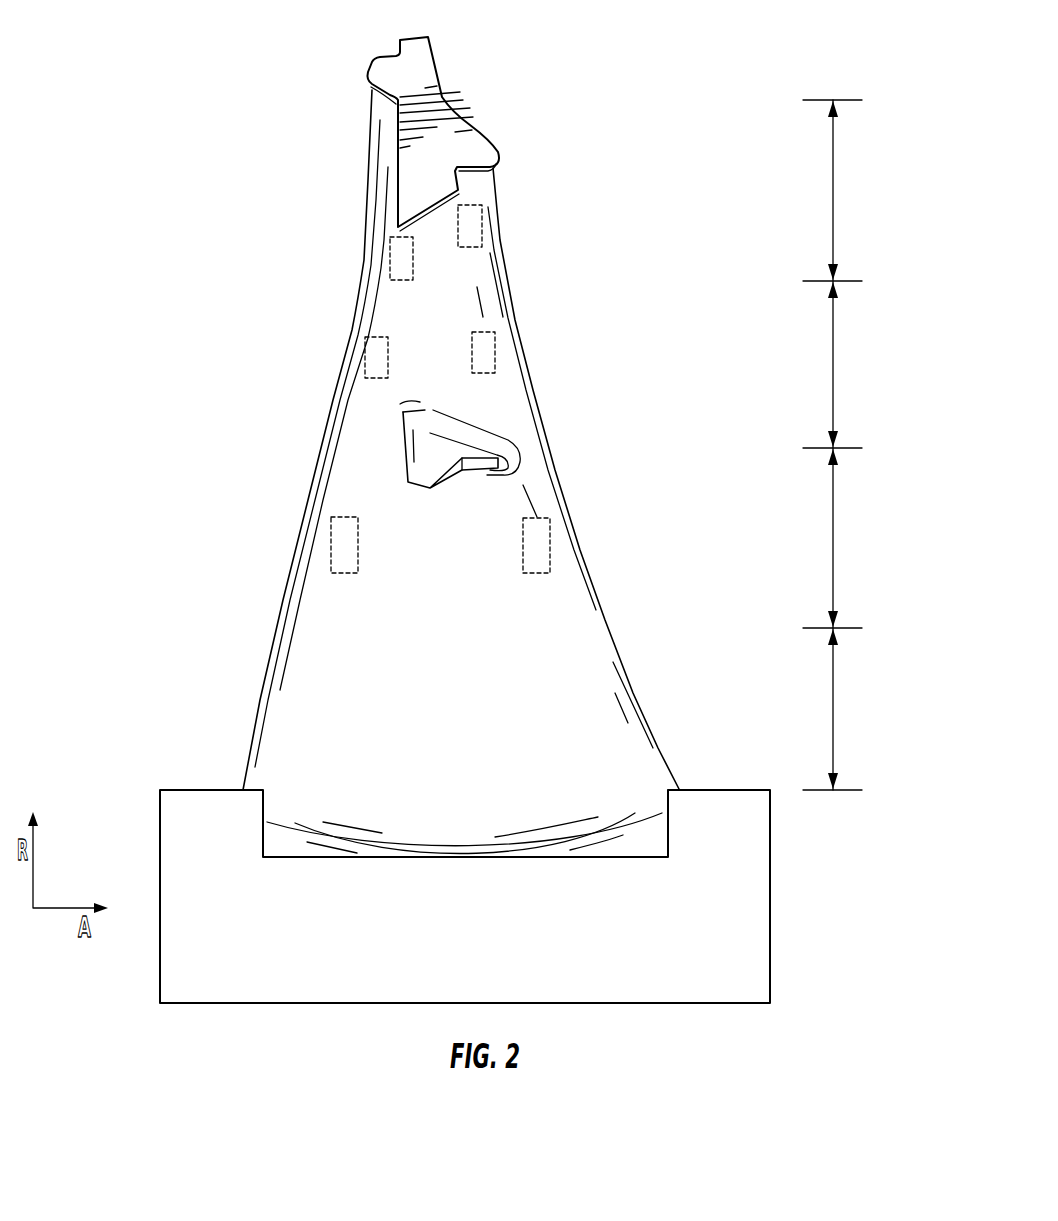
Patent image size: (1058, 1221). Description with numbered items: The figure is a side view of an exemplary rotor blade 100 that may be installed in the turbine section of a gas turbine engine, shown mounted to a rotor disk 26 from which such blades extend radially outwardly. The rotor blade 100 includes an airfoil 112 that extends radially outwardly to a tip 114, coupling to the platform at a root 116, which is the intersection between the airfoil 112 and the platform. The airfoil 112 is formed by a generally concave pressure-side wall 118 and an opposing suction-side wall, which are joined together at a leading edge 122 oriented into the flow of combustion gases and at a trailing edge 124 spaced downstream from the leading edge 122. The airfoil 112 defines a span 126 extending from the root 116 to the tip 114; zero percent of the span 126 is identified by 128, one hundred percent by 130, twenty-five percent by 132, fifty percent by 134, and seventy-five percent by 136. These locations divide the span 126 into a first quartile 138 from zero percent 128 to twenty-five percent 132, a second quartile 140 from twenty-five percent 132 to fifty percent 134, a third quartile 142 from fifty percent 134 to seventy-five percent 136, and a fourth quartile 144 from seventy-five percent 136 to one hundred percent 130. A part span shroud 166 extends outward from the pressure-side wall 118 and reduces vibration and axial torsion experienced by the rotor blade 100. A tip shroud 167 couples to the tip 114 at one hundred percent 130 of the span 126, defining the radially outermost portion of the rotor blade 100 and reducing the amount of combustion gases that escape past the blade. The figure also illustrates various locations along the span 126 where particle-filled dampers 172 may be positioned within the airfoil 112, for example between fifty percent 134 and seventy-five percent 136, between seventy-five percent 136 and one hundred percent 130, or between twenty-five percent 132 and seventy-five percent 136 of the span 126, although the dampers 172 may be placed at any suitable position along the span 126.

The rotor blade 100 is at (148, 186).
The rotor disk 26 is at (577, 912).
The airfoil 112 is at (340, 488).
The tip 114 is at (495, 185).
The root 116 is at (681, 789).
The pressure-side wall 118 is at (492, 666).
The leading edge 122 is at (340, 396).
The trailing edge 124 is at (507, 297).
The span 126 is at (886, 118).
The zero percent of the span 128 is at (845, 790).
The one hundred percent of the span 130 is at (820, 101).
The twenty-five percent of the span 132 is at (820, 629).
The fifty percent of the span 134 is at (820, 449).
The seventy-five percent of the span 136 is at (820, 282).
The first quartile 138 is at (830, 690).
The second quartile 140 is at (830, 533).
The third quartile 142 is at (830, 365).
The fourth quartile 144 is at (830, 183).
The part span shroud 166 is at (435, 462).
The tip shroud 167 is at (455, 138).
The particle-filled dampers 172 is at (398, 270).